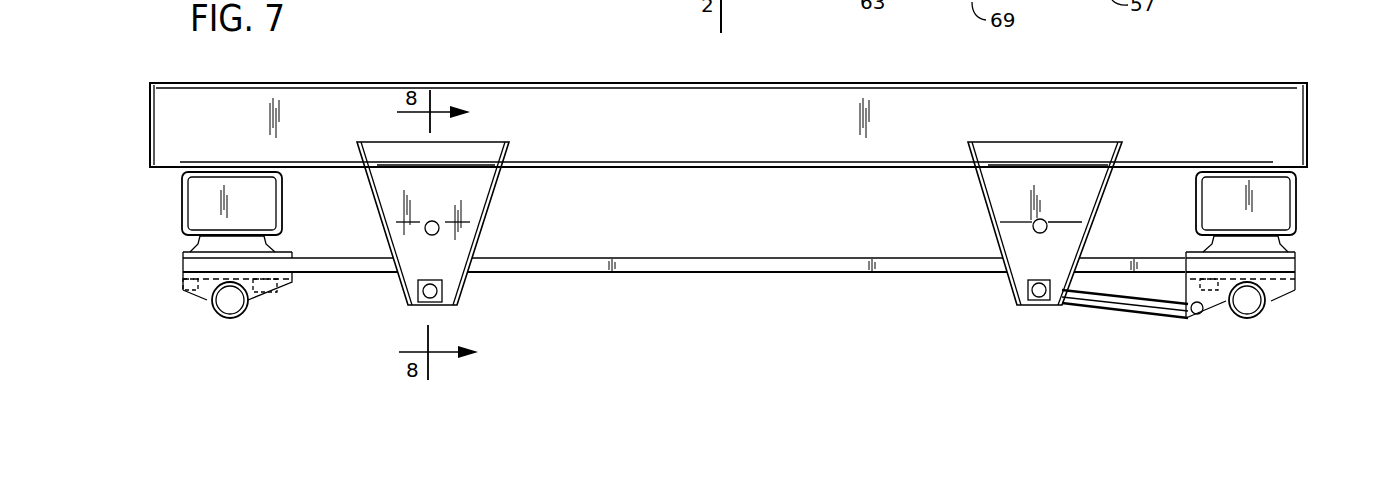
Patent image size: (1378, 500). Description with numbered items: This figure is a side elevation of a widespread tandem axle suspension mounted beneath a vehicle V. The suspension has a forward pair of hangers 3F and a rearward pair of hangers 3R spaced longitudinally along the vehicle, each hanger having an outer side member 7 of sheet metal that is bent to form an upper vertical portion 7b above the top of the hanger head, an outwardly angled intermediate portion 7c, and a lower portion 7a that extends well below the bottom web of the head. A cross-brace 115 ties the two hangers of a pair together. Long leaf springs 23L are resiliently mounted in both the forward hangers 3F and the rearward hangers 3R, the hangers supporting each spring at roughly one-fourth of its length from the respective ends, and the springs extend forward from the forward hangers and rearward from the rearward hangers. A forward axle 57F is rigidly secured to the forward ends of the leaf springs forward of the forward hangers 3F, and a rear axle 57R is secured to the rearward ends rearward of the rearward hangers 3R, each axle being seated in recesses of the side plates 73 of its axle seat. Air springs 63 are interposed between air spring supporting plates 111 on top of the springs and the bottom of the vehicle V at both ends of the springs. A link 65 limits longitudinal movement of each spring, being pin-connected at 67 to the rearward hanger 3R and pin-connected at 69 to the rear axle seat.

The vehicle V is at (1203, 75).
The forward pair of hangers 3F is at (487, 133).
The rearward pair of hangers 3R is at (1128, 130).
The outer side member 7 is at (473, 190).
The lower portion of outer side plate 7a is at (408, 250).
The upper vertical portion of outer side plate 7b is at (380, 157).
The outwardly angled intermediate portion of outer side plate 7c is at (390, 196).
The leaf springs 23L is at (742, 258).
The forward axle 57F is at (225, 320).
The rear axle 57R is at (1258, 318).
The air springs 63 is at (197, 203).
The link 65 is at (1114, 300).
The pin connection of link to hanger 67 is at (409, 294).
The pin connection of link to axle seat 69 is at (1197, 315).
The side plates of axle seat 73 is at (195, 298).
The air spring supporting plate 111 is at (183, 258).
The cross-brace 115 is at (434, 221).